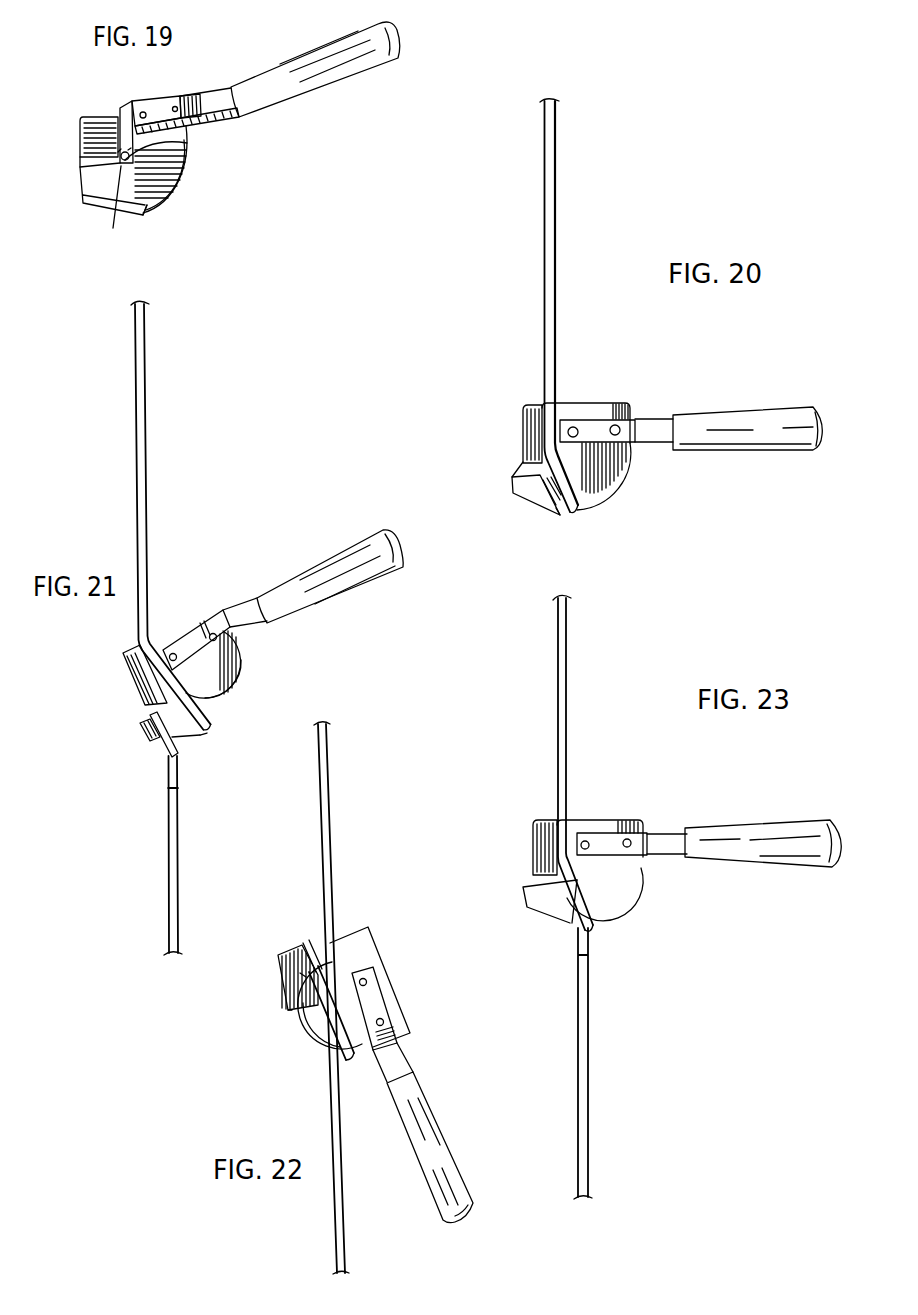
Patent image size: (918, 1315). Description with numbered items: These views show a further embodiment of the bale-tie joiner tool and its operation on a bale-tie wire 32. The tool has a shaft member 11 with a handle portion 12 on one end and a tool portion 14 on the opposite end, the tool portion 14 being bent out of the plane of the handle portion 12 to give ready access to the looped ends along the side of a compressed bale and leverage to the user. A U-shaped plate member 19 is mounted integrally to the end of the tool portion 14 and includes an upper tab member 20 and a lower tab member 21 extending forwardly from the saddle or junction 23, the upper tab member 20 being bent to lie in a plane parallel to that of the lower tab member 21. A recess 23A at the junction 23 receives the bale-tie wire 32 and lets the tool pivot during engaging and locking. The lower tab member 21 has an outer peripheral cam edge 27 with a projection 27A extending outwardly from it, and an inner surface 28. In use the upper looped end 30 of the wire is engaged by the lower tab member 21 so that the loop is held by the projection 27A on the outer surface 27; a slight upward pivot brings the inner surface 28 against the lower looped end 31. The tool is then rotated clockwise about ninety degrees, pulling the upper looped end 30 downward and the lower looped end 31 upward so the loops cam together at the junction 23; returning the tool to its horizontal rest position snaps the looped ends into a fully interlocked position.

In FIG. 19, the shaft member 11 is at (209, 105).
In FIG. 20, the shaft member 11 is at (657, 427).
In FIG. 21, the shaft member 11 is at (247, 617).
In FIG. 22, the shaft member 11 is at (397, 1058).
In FIG. 23, the shaft member 11 is at (660, 833).
In FIG. 19, the handle portion 12 is at (331, 81).
In FIG. 20, the handle portion 12 is at (781, 435).
In FIG. 21, the handle portion 12 is at (360, 580).
In FIG. 22, the handle portion 12 is at (443, 1162).
In FIG. 23, the handle portion 12 is at (796, 851).
In FIG. 19, the tool portion 14 is at (133, 107).
In FIG. 20, the tool portion 14 is at (570, 420).
In FIG. 21, the tool portion 14 is at (170, 650).
In FIG. 22, the tool portion 14 is at (367, 973).
In FIG. 23, the tool portion 14 is at (582, 833).
In FIG. 19, the U-shaped plate member 19 is at (183, 173).
In FIG. 20, the U-shaped plate member 19 is at (613, 465).
In FIG. 21, the U-shaped plate member 19 is at (227, 665).
In FIG. 22, the U-shaped plate member 19 is at (353, 930).
In FIG. 23, the U-shaped plate member 19 is at (642, 873).
In FIG. 19, the upper tab member 20 is at (92, 117).
In FIG. 20, the upper tab member 20 is at (523, 412).
In FIG. 21, the upper tab member 20 is at (127, 656).
In FIG. 22, the upper tab member 20 is at (377, 940).
In FIG. 23, the upper tab member 20 is at (545, 847).
In FIG. 19, the lower tab member 21 is at (82, 202).
In FIG. 20, the lower tab member 21 is at (532, 497).
In FIG. 21, the lower tab member 21 is at (148, 743).
In FIG. 22, the lower tab member 21 is at (278, 952).
In FIG. 23, the lower tab member 21 is at (550, 901).
In FIG. 19, the saddle or junction 23 is at (188, 142).
In FIG. 19, the recess 23A is at (111, 228).
In FIG. 22, the recess 23A is at (306, 976).
In FIG. 19, the outer peripheral cam edge 27 is at (167, 197).
In FIG. 20, the outer peripheral cam edge 27 is at (607, 493).
In FIG. 21, the outer peripheral cam edge 27 is at (238, 688).
In FIG. 22, the outer peripheral cam edge 27 is at (325, 1040).
In FIG. 19, the projection 27A is at (147, 214).
In FIG. 20, the projection 27A is at (560, 517).
In FIG. 21, the projection 27A is at (207, 736).
In FIG. 22, the projection 27A is at (287, 1007).
In FIG. 19, the inner surface 28 is at (80, 163).
In FIG. 20, the inner surface 28 is at (523, 462).
In FIG. 20, the upper looped end 30 is at (577, 512).
In FIG. 21, the upper looped end 30 is at (212, 727).
In FIG. 22, the upper looped end 30 is at (348, 1058).
In FIG. 23, the upper looped end 30 is at (592, 931).
In FIG. 21, the lower looped end 31 is at (147, 715).
In FIG. 22, the lower looped end 31 is at (318, 963).
In FIG. 23, the lower looped end 31 is at (580, 881).
In FIG. 20, the bale-tie wire 32 is at (552, 218).
In FIG. 21, the bale-tie wire 32 is at (144, 388).
In FIG. 22, the bale-tie wire 32 is at (327, 810).
In FIG. 23, the bale-tie wire 32 is at (562, 720).